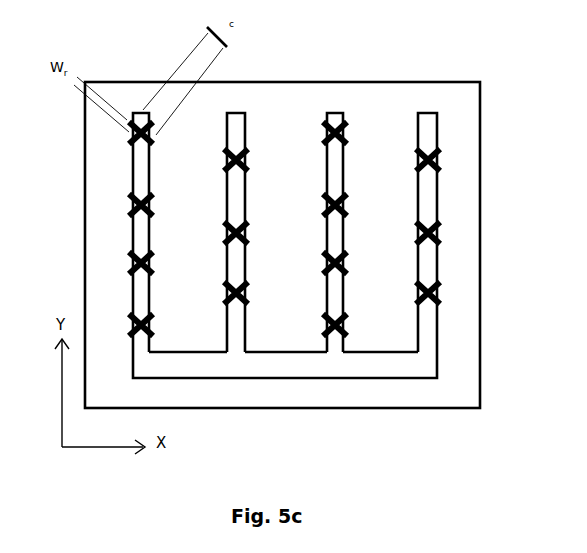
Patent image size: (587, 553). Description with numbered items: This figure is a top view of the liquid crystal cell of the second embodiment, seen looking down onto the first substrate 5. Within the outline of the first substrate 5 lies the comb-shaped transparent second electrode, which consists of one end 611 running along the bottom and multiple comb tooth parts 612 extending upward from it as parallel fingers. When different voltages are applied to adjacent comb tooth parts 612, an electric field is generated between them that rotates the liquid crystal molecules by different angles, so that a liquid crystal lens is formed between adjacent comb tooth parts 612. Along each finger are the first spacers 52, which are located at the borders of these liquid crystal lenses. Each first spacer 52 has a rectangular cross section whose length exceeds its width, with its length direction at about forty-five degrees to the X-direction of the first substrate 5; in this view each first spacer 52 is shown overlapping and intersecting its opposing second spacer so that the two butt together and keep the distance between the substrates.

The first substrate 5 is at (350, 81).
The first spacer 52 is at (133, 129).
The one end 611 is at (302, 372).
The comb tooth parts 612 is at (427, 111).